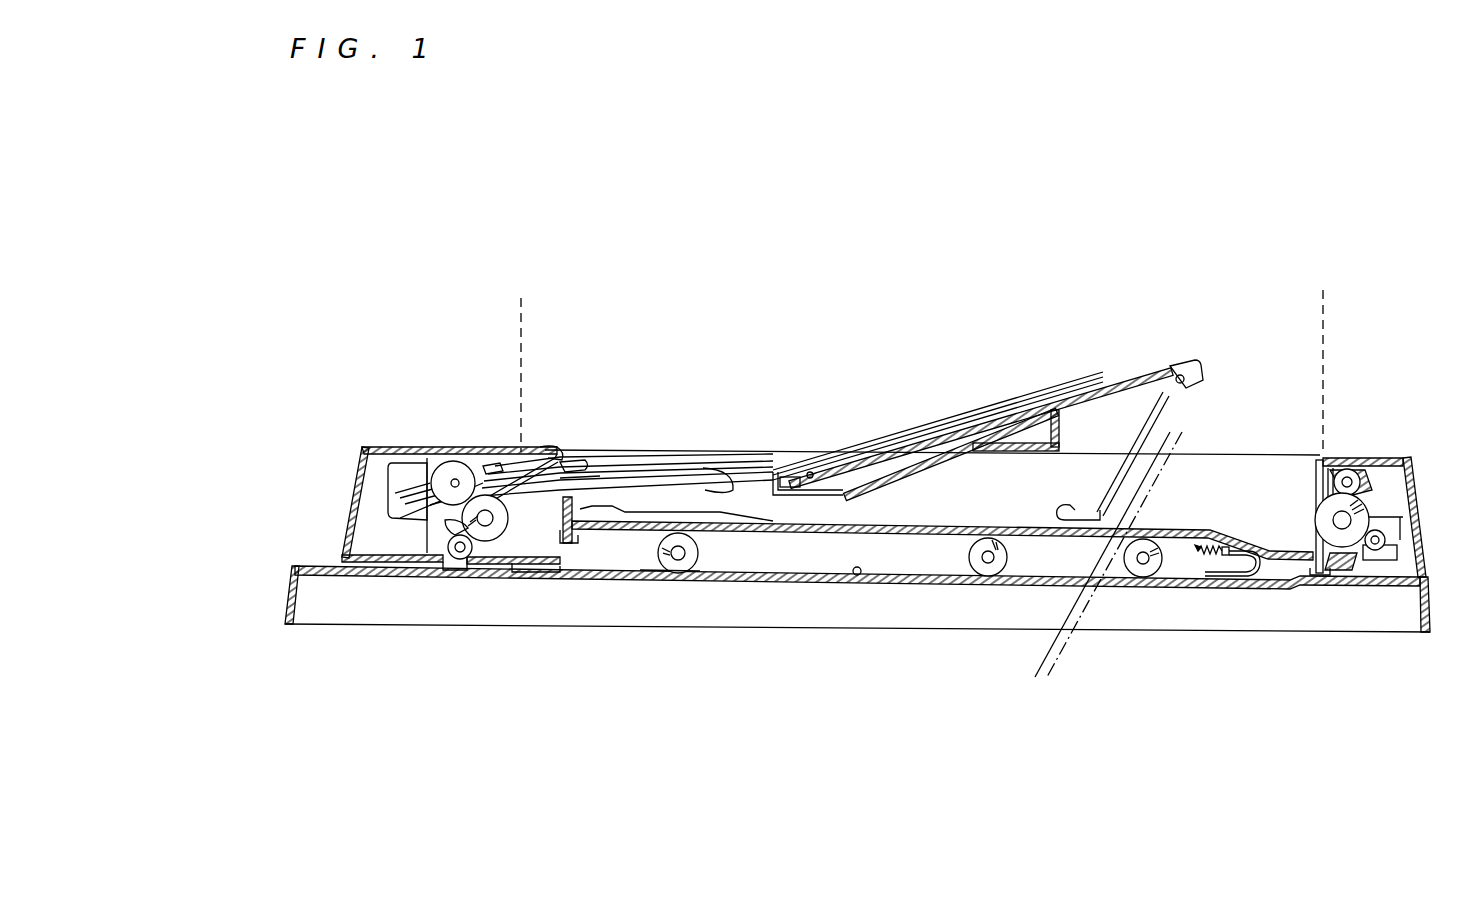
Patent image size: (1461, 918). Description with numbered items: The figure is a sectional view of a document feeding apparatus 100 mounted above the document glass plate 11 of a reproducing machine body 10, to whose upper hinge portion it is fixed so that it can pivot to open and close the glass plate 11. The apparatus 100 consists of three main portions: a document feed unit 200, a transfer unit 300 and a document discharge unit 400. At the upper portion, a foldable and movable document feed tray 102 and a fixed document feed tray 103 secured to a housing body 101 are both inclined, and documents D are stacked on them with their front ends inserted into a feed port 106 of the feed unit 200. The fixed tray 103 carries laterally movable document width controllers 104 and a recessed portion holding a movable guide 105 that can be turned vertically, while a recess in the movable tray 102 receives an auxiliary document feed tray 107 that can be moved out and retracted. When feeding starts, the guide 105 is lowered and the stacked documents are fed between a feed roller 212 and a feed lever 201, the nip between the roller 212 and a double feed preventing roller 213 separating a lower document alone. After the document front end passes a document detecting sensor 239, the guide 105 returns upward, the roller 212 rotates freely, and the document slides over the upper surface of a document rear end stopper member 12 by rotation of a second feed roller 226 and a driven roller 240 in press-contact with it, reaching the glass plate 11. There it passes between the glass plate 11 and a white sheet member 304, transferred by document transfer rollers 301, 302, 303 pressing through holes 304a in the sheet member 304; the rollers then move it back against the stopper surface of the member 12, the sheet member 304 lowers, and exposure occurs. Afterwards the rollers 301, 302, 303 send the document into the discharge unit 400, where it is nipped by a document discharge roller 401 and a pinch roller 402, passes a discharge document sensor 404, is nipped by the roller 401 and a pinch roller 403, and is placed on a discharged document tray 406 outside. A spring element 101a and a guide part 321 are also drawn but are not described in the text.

The reproducing machine body 10 is at (321, 632).
The document glass plate 11 is at (590, 577).
The document rear end stopper member 12 is at (523, 565).
The document feeding apparatus 100 is at (824, 259).
The housing body 101 is at (548, 450).
The tension spring 101a is at (1205, 557).
The movable document feed tray 102 is at (1126, 375).
The fixed document feed tray 103 is at (703, 490).
The document width controllers 104 is at (648, 450).
The movable guide 105 is at (572, 458).
The feed port 106 is at (580, 464).
The auxiliary document feed tray 107 is at (843, 452).
The documents D is at (902, 430).
The document feed unit 200 is at (518, 318).
The feed lever 201 is at (536, 452).
The feed roller 212 is at (490, 540).
The double feed preventing roller 213 is at (452, 462).
The second feed roller 226 is at (485, 589).
The document detecting sensor 239 is at (445, 527).
The driven roller 240 is at (457, 560).
The transfer unit 300 is at (1318, 322).
The document transfer roller 301 is at (693, 560).
The document transfer roller 302 is at (978, 576).
The document transfer roller 303 is at (1130, 580).
The white sheet member 304 is at (860, 577).
The holes 304a is at (652, 572).
The guide plate 321 is at (558, 568).
The document discharge unit 400 is at (1432, 331).
The document discharge roller 401 is at (1333, 537).
The pinch roller 402 is at (1387, 530).
The pinch roller 403 is at (1358, 475).
The discharge document sensor 404 is at (1377, 497).
The discharged document tray 406 is at (1188, 533).